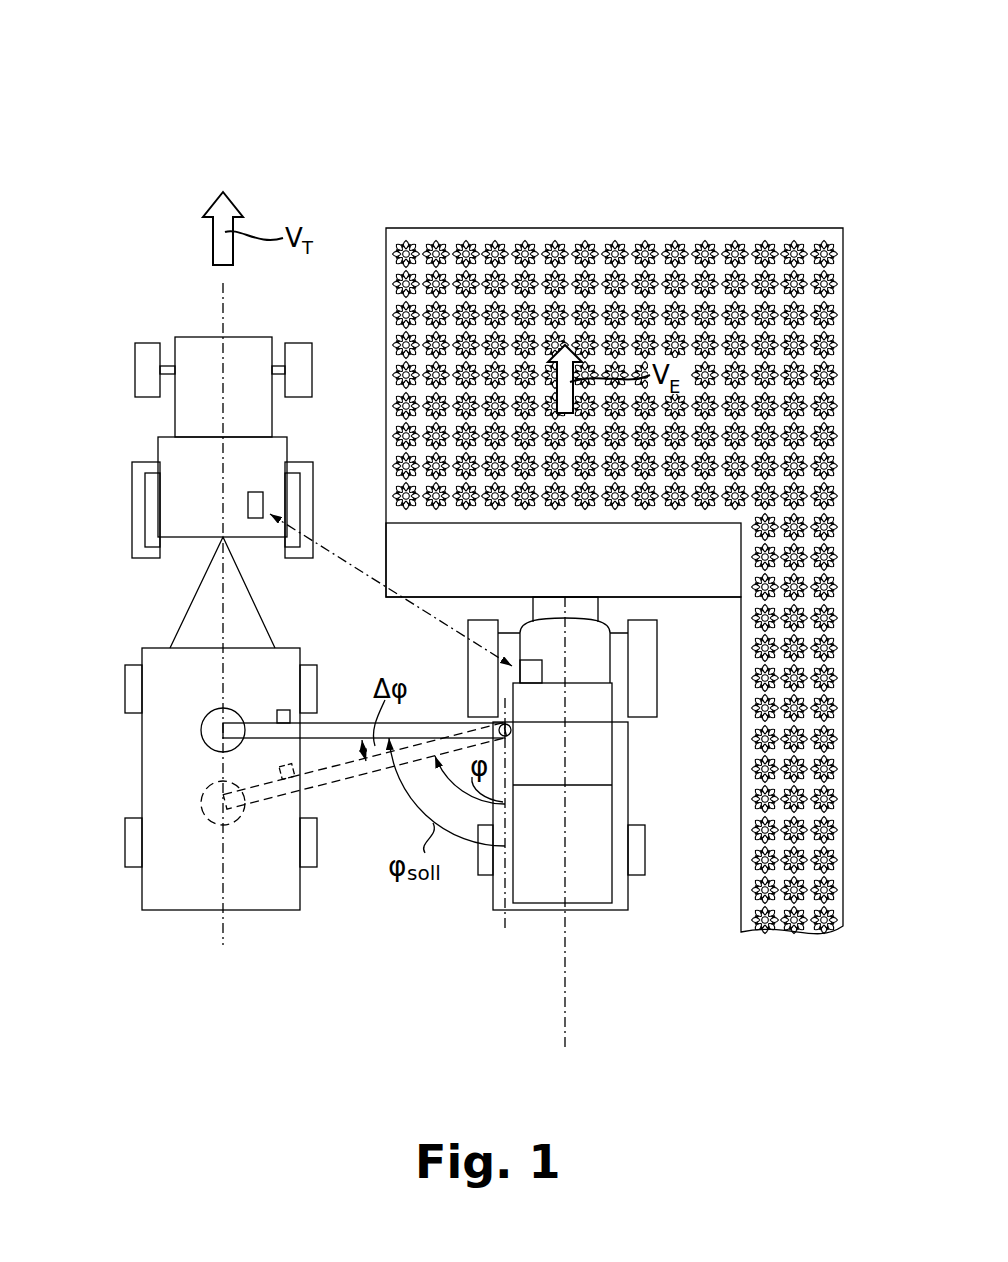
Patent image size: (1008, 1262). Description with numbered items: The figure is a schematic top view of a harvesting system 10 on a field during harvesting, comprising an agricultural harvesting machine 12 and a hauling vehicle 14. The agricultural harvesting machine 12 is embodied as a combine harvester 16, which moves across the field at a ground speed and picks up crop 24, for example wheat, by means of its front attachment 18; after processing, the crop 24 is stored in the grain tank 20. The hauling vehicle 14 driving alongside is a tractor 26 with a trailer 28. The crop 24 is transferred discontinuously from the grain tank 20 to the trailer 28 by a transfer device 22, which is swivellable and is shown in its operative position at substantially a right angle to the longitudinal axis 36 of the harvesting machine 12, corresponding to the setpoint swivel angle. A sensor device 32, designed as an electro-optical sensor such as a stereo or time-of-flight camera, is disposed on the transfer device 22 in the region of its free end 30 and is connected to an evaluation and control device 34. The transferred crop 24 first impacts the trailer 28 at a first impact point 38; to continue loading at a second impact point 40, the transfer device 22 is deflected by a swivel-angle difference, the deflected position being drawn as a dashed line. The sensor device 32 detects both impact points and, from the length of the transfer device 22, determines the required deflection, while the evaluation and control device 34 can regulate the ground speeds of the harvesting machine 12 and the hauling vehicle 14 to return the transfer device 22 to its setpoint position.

The harvesting system 10 is at (568, 94).
The agricultural harvesting machine 12 is at (665, 938).
The hauling vehicle 14 is at (156, 282).
The combine harvester 16 is at (590, 668).
The front attachment 18 is at (697, 560).
The grain tank 20 is at (590, 745).
The transfer device 22 is at (330, 723).
The crop 24 is at (762, 250).
The tractor 26 is at (177, 458).
The trailer 28 is at (163, 773).
The free end 30 is at (250, 722).
The sensor device 32 is at (283, 710).
The evaluation and control device 34 is at (255, 492).
The longitudinal axis 36 is at (565, 985).
The first impact point 38 is at (200, 727).
The second impact point 40 is at (202, 808).